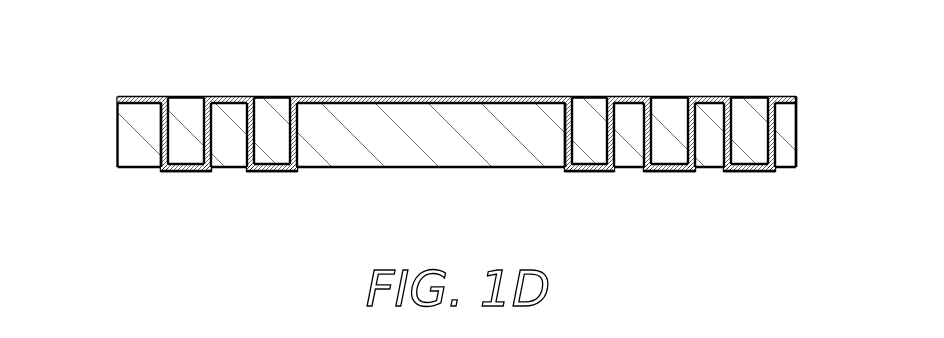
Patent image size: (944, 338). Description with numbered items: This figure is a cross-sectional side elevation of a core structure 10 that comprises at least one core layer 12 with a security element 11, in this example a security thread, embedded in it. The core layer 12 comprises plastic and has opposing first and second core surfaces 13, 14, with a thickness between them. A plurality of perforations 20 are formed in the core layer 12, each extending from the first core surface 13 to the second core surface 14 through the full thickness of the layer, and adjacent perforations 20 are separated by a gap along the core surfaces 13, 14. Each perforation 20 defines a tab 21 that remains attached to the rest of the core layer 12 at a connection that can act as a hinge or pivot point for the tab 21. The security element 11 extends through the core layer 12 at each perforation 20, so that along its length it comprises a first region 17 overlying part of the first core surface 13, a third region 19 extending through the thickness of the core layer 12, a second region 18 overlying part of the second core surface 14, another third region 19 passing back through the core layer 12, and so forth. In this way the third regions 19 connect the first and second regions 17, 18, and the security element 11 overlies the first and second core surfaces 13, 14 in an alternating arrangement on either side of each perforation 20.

The core structure 10 is at (824, 147).
The security element 11 is at (117, 97).
The core layer 12 is at (388, 150).
The first core surface 13 is at (678, 97).
The second core surface 14 is at (462, 170).
The first region 17 is at (132, 96).
The second region 18 is at (187, 172).
The third region 19 is at (158, 132).
The perforation 20 is at (157, 152).
The tab 21 is at (181, 102).